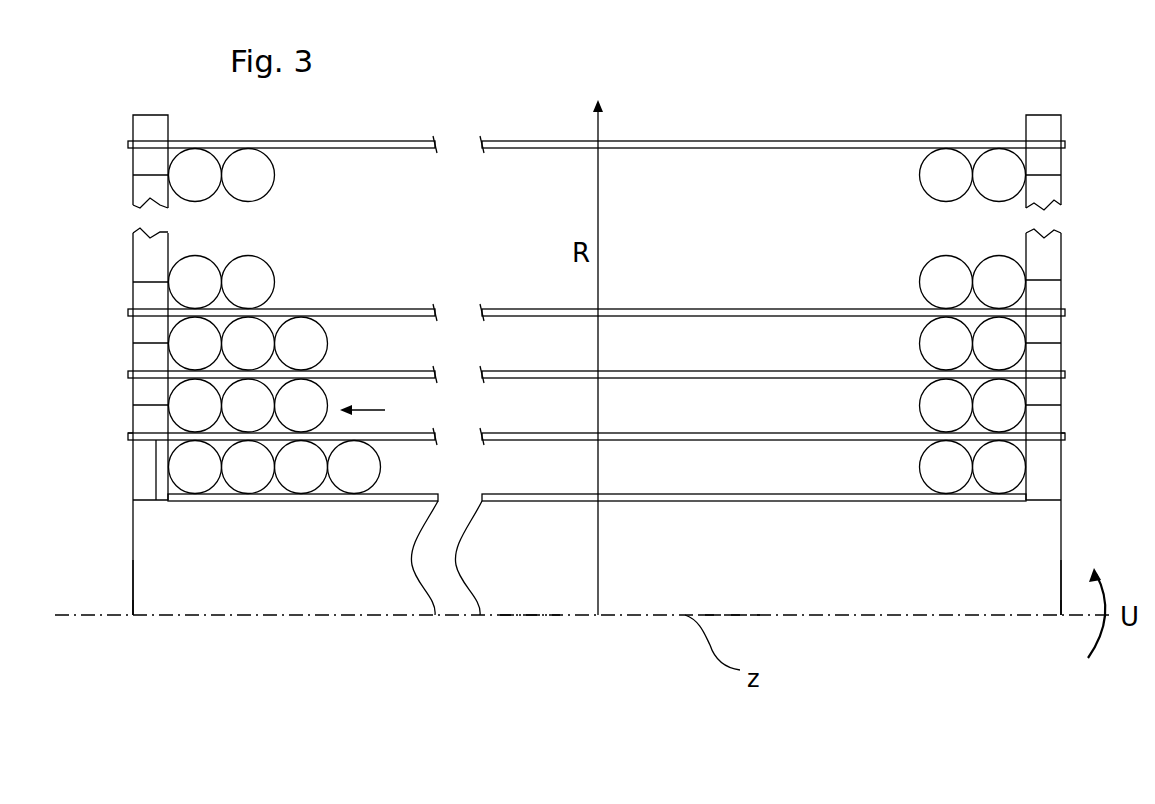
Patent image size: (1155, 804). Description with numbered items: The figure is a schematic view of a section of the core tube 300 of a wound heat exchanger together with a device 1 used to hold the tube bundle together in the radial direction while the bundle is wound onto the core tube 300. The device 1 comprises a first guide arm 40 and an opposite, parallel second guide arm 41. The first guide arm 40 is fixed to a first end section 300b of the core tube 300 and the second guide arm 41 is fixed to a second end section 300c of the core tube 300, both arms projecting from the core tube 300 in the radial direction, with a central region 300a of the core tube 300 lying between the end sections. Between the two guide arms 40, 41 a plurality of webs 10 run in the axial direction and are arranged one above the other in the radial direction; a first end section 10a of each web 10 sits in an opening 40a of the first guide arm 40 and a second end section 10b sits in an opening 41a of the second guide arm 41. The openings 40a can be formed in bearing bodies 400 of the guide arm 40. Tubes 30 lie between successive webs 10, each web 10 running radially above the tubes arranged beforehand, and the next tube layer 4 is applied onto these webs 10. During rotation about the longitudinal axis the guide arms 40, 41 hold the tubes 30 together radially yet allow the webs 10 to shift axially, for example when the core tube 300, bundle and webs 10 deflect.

The device 1 is at (1070, 255).
The tube layer 4 is at (374, 413).
The web 10 is at (722, 145).
The first end section of the web 10a is at (148, 432).
The second end section of the web 10b is at (1046, 431).
The tube 30 is at (918, 173).
The first guide arm 40 is at (126, 163).
The opening of the first guide arm 40a is at (156, 500).
The second guide arm 41 is at (1069, 331).
The opening of the second guide arm 41a is at (1048, 445).
The bearing body 400 is at (132, 457).
The core tube 300 is at (540, 568).
The core section 300a is at (757, 503).
The first end section of the core tube 300b is at (147, 540).
The second end section of the core tube 300c is at (1040, 585).